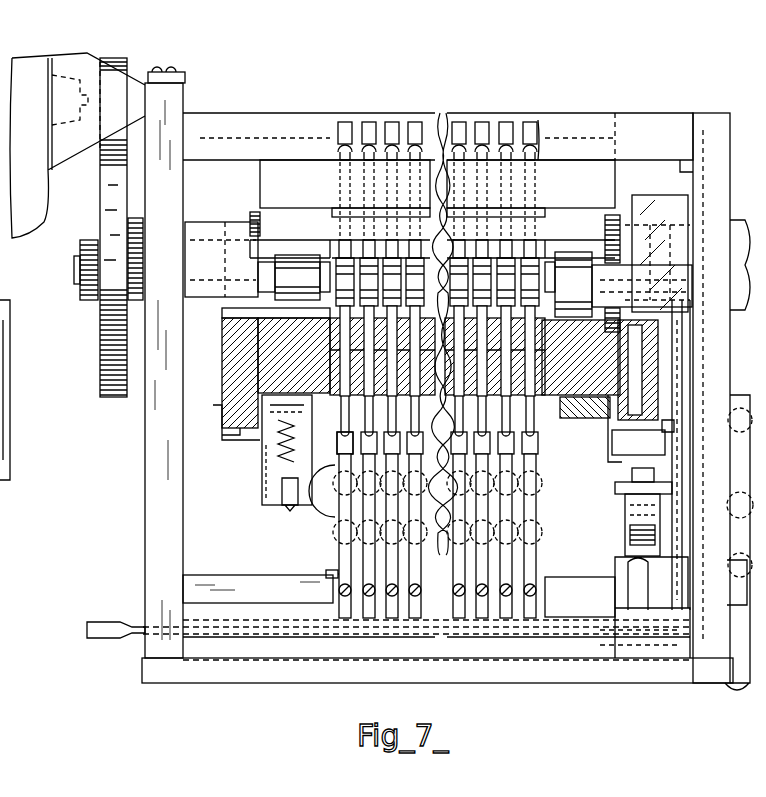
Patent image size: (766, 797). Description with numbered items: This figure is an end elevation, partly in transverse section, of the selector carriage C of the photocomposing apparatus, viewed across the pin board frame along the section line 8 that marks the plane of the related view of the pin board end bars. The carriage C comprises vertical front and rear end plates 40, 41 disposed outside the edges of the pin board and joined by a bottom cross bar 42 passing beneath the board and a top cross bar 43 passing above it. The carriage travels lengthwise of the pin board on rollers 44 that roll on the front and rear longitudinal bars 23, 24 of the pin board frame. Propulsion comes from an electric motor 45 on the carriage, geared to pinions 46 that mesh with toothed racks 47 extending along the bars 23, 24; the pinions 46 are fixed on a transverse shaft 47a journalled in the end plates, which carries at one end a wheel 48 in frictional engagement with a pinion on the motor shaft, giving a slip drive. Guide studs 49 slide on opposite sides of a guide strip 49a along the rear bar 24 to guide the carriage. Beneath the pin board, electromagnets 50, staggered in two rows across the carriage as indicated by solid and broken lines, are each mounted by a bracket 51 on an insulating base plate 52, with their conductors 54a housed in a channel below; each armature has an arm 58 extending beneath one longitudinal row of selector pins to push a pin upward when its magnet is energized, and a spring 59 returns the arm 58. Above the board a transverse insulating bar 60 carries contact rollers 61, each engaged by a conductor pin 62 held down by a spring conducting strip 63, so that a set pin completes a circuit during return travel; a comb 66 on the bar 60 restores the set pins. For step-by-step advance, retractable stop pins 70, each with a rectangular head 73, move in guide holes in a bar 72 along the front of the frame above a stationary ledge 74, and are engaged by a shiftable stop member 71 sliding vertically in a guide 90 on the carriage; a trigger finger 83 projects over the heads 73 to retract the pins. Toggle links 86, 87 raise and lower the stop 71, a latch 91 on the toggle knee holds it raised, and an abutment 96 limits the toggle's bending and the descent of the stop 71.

The section line 8 is at (370, 160).
The front longitudinal frame bar 23 is at (618, 343).
The rear longitudinal frame bar 24 is at (227, 346).
The front end plate 40 is at (717, 373).
The rear end plate 41 is at (148, 467).
The bottom cross bar 42 is at (572, 686).
The top cross bar 43 is at (644, 122).
The rollers 44 is at (425, 284).
The electric motor 45 is at (77, 145).
The pinions 46 is at (253, 218).
The toothed racks 47 is at (224, 326).
The transverse shaft 47a is at (298, 246).
The wheel 48 is at (104, 190).
The guide studs 49 is at (233, 438).
The guide strip 49a is at (128, 68).
The electromagnets 50 is at (340, 508).
The bracket 51 is at (365, 527).
The base plate 52 is at (238, 568).
The electrical conductors 54a is at (120, 633).
The arms 58 is at (337, 447).
The spring 59 is at (326, 573).
The transverse bar 60 is at (304, 212).
The contact elements 61 is at (540, 258).
The conductor pins 62 is at (460, 158).
The spring conducting strip 63 is at (462, 128).
The comb 66 is at (496, 265).
The stop pins 70 is at (612, 430).
The stop member 71 is at (655, 312).
The bar 72 is at (658, 390).
The head 73 is at (638, 442).
The stationary ledge 74 is at (620, 468).
The finger 83 is at (665, 428).
The toggle link 86 is at (614, 524).
The toggle link 87 is at (680, 352).
The guide 90 is at (693, 168).
The latch 91 is at (642, 490).
The abutment 96 is at (632, 478).
The selector carriage C is at (147, 565).